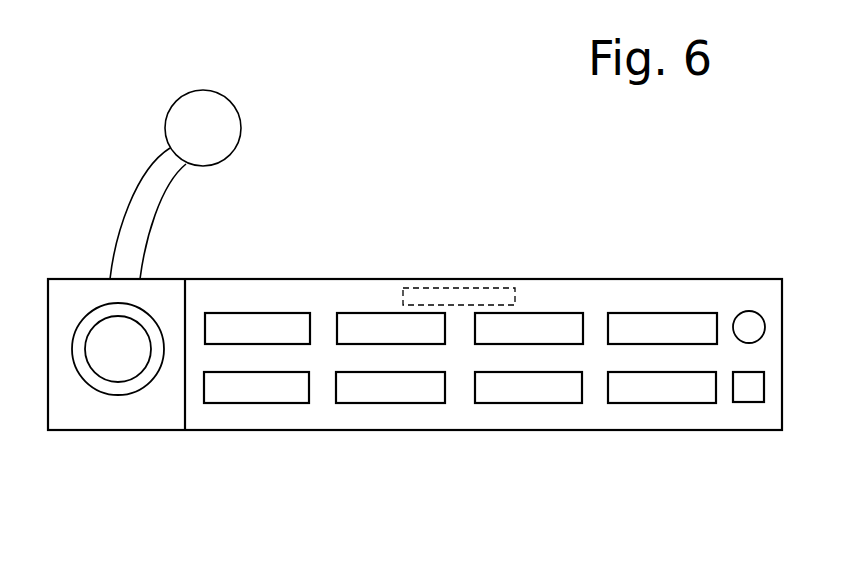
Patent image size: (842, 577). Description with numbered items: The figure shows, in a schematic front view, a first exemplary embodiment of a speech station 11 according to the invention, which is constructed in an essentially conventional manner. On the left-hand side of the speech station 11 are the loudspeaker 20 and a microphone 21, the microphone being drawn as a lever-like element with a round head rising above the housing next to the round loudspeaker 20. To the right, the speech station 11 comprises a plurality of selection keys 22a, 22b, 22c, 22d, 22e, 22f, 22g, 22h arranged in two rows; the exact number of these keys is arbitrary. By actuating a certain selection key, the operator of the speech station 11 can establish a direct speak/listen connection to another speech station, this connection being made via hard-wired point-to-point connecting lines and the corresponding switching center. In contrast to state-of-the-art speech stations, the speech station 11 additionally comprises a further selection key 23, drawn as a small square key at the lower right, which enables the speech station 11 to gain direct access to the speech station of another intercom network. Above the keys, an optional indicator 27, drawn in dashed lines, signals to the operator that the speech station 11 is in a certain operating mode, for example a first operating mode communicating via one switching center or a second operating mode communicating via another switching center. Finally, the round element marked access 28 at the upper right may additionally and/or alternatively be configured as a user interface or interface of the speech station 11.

The speech station 11 is at (313, 150).
The loudspeaker 20 is at (117, 360).
The microphone 21 is at (155, 185).
The selection key 22a is at (278, 390).
The selection key 22b is at (410, 385).
The selection key 22c is at (537, 387).
The selection key 22d is at (640, 387).
The selection key 22e is at (236, 327).
The selection key 22f is at (363, 328).
The selection key 22g is at (535, 330).
The selection key 22h is at (663, 323).
The selection key 23 is at (750, 387).
The indicator 27 is at (450, 288).
The access 28 is at (749, 318).